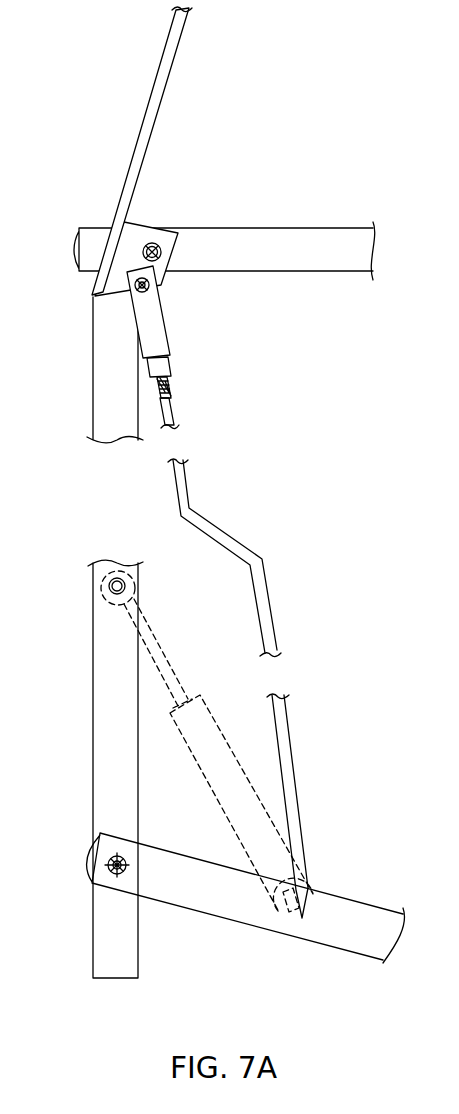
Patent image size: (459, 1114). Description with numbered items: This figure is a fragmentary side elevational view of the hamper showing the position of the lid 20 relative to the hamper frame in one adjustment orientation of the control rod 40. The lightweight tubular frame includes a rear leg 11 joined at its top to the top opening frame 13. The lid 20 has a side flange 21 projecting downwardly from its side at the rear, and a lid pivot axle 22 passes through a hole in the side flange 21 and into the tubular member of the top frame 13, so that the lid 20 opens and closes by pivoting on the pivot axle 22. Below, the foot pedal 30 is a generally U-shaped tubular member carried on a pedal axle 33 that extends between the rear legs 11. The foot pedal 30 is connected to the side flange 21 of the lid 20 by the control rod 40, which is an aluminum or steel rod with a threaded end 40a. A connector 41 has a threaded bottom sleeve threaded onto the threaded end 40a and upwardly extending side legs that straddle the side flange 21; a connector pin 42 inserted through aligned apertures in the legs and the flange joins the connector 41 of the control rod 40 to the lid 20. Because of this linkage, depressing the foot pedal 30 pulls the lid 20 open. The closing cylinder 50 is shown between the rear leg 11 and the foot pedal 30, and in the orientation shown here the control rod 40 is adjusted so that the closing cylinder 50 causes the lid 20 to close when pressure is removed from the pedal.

The rear legs 11 is at (102, 397).
The top opening frame 13 is at (302, 237).
The lid 20 is at (150, 90).
The side flanges 21 is at (120, 242).
The lid pivot axle 22 is at (158, 244).
The foot pedal 30 is at (353, 910).
The pedal axle 33 is at (110, 873).
The control rod 40 is at (247, 536).
The threaded end 40a is at (172, 390).
The connector 41 is at (156, 323).
The connector pin 42 is at (136, 292).
The closing cylinder 50 is at (246, 746).